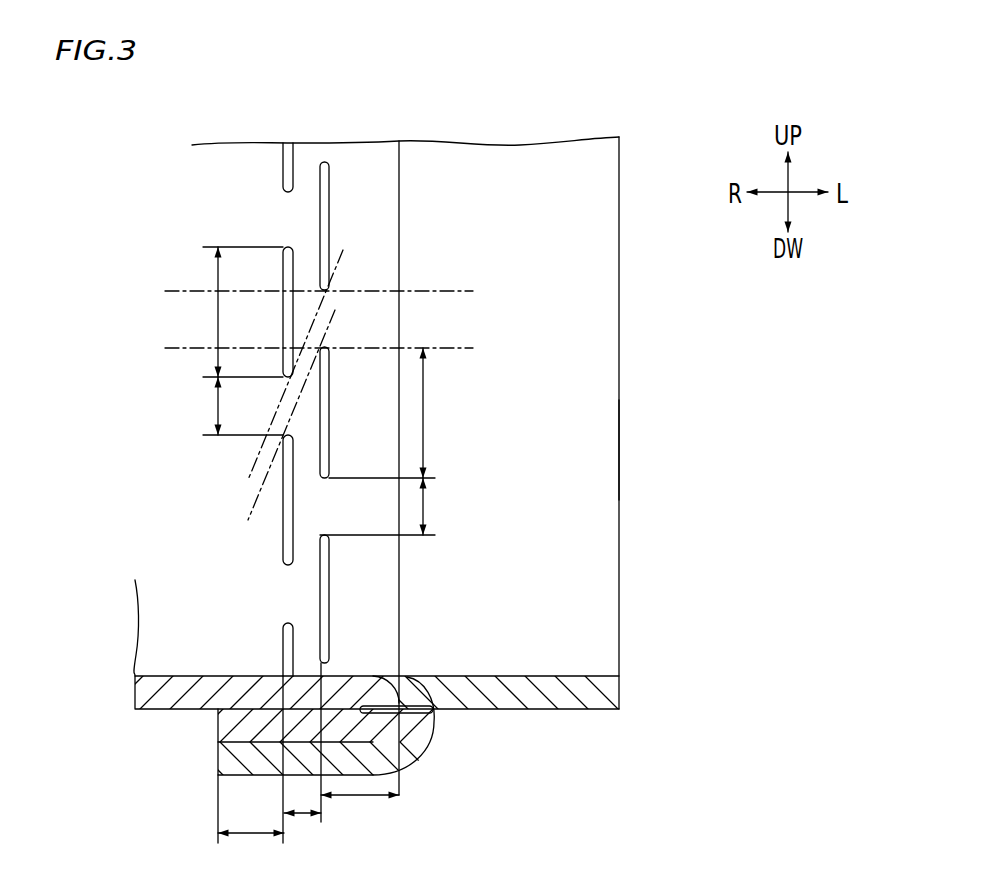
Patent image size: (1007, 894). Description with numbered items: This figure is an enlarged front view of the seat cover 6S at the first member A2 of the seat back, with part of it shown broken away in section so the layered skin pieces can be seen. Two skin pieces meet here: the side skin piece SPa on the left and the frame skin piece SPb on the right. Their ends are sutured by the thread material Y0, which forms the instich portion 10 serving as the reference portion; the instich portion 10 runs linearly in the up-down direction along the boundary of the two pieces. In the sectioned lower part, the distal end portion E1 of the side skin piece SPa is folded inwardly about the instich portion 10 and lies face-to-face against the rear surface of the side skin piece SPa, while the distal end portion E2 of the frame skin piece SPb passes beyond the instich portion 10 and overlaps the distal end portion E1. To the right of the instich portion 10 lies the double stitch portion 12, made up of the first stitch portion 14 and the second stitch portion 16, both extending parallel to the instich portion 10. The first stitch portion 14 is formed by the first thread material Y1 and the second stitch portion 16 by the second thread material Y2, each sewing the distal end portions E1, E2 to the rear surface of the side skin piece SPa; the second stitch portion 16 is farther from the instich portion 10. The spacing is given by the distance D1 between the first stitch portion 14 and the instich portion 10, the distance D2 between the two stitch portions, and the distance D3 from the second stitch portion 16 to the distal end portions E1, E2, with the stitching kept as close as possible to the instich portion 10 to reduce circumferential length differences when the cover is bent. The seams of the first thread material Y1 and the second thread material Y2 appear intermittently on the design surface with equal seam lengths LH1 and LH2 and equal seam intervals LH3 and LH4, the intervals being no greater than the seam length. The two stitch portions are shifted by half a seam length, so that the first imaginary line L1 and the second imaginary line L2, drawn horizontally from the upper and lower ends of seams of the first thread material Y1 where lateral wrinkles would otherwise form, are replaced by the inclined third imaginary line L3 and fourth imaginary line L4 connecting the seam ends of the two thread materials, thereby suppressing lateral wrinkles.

The instich portion 10 is at (455, 443).
The double stitch portion 12 is at (112, 163).
The first stitch portion 14 is at (248, 492).
The second stitch portion 16 is at (203, 468).
The seat cover 6S is at (455, 118).
The first member A2 is at (593, 123).
The first thread material Y1 is at (323, 192).
The second thread material Y2 is at (281, 164).
The thread material Y0 is at (417, 713).
The distal end portion of the side skin piece E1 is at (218, 722).
The distal end portion of the frame skin piece E2 is at (218, 758).
The side skin piece SPa is at (193, 557).
The frame skin piece SPb is at (572, 463).
The first imaginary line L1 is at (452, 348).
The second imaginary line L2 is at (452, 291).
The third imaginary line L3 is at (252, 502).
The fourth imaginary line L4 is at (252, 470).
The seam length of the first thread material LH1 is at (399, 413).
The seam length of the second thread material LH2 is at (228, 312).
The seam interval of the first thread material LH3 is at (395, 506).
The seam interval of the second thread material LH4 is at (226, 406).
The distance between the first stitch portion and the instich portion D1 is at (360, 812).
The distance between the first stitch portion and the second stitch portion D2 is at (302, 832).
The distance between the second stitch portion and the distal end portions D3 is at (251, 821).